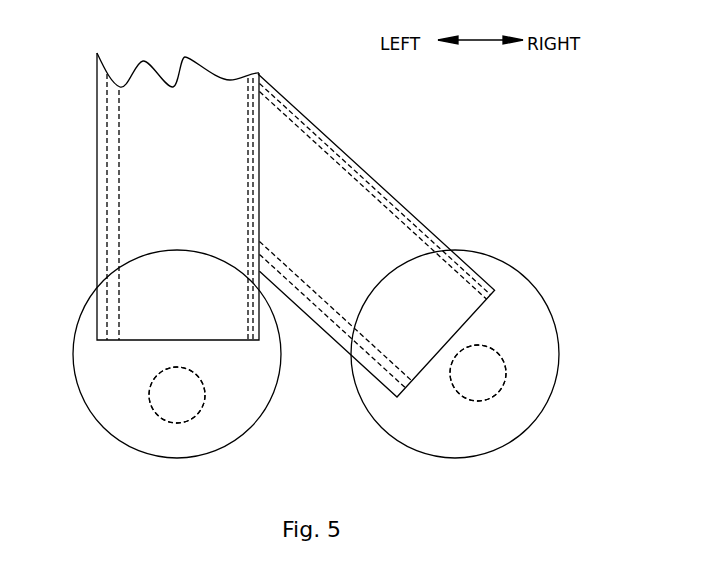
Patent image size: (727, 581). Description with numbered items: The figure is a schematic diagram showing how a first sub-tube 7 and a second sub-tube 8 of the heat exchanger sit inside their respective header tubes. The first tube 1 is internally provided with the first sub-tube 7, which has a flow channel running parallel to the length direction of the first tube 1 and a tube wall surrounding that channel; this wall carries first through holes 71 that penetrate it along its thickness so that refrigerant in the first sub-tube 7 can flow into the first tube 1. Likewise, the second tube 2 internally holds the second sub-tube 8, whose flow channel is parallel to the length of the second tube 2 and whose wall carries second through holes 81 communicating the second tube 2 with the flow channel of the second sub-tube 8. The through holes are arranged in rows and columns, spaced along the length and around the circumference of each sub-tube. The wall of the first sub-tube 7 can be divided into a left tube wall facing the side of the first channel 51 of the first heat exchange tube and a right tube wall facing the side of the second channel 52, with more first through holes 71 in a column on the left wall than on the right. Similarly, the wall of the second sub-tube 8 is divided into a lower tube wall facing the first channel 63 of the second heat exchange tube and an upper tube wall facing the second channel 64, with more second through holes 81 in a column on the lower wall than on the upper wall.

The first tube 1 is at (73, 338).
The second tube 2 is at (542, 292).
The first sub-tube 7 is at (182, 424).
The first through hole 71 is at (152, 408).
The second sub-tube 8 is at (503, 392).
The second through hole 81 is at (468, 402).
The first channel of the first heat exchange tube 51 is at (113, 213).
The second channel of the first heat exchange tube 52 is at (249, 100).
The first channel of the second heat exchange tube 63 is at (336, 334).
The second channel of the second heat exchange tube 64 is at (381, 196).